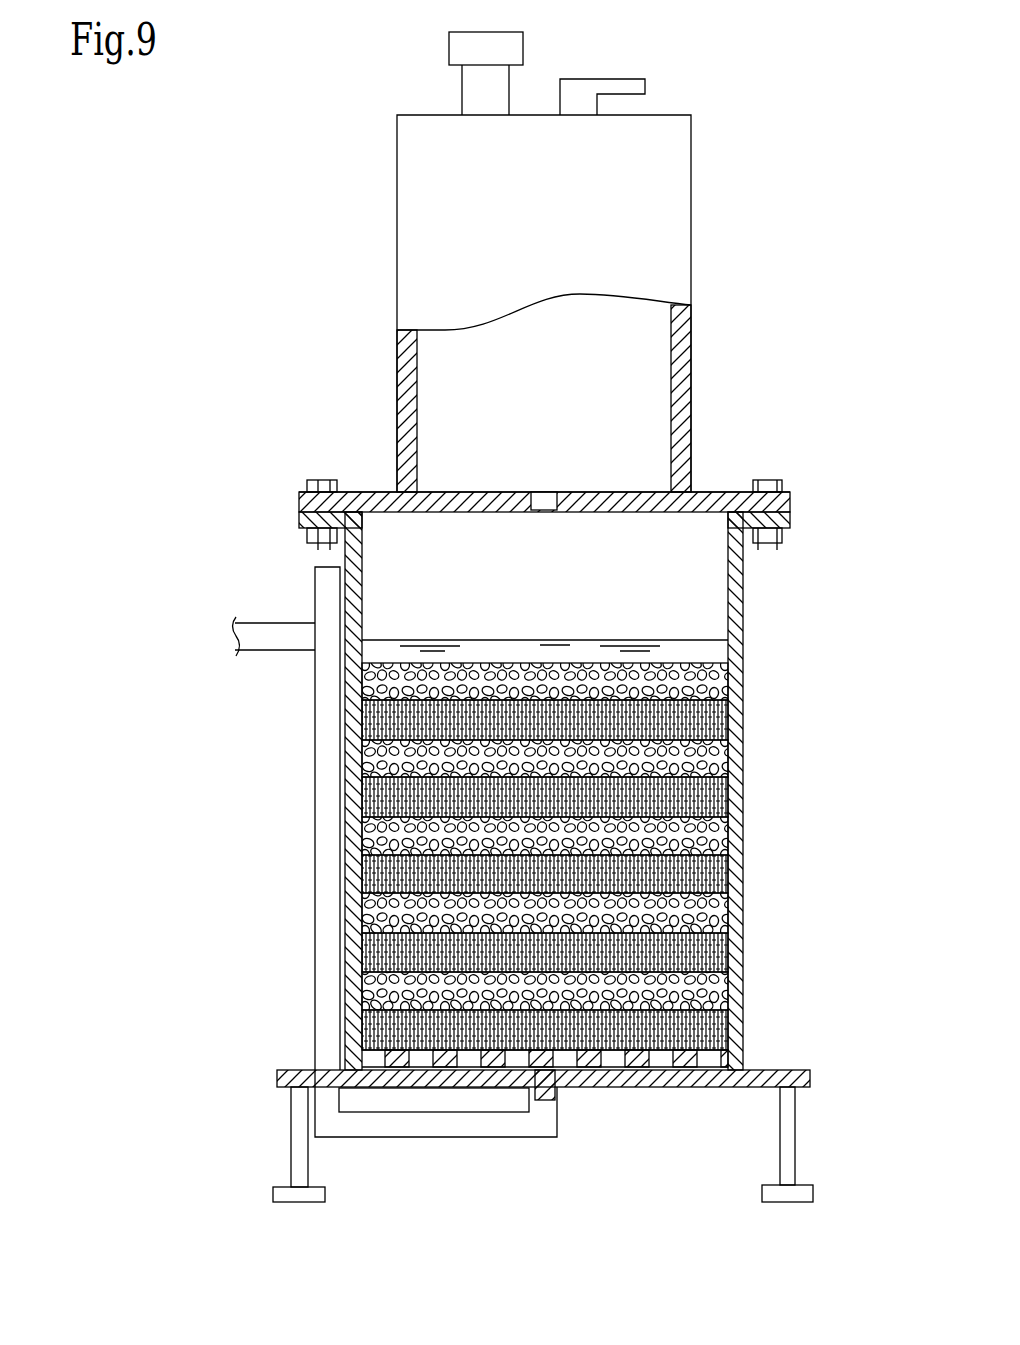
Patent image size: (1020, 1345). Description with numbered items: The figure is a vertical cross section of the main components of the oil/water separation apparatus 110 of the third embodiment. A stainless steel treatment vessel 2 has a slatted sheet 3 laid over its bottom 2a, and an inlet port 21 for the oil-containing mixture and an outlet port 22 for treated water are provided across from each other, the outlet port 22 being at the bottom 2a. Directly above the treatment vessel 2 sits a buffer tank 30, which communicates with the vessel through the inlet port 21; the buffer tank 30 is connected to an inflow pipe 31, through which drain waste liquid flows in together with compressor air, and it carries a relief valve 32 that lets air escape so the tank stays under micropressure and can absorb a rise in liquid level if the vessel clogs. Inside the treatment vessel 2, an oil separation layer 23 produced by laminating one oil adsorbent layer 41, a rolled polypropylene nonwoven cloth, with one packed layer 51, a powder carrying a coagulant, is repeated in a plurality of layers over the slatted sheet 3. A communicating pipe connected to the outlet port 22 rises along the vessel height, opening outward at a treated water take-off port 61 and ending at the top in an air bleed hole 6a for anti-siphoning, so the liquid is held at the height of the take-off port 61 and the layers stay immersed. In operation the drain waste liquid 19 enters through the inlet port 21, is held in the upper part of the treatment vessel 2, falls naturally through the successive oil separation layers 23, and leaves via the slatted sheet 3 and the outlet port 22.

The relief valve 32 is at (462, 49).
The inflow pipe 31 is at (613, 85).
The buffer tank 30 is at (685, 350).
The inlet port 21 is at (547, 502).
The air bleed hole 6a is at (333, 580).
The treated water take-off port 61 is at (267, 632).
The oil/water separation apparatus 110 is at (767, 598).
The drain waste liquid 19 is at (717, 652).
The packed layer 51 is at (367, 677).
The oil adsorbent layer 41 is at (362, 722).
The oil separation layer 23 is at (527, 856).
The treatment vessel 2 is at (740, 945).
The slatted sheet 3 is at (693, 1062).
The bottom 2a is at (478, 1072).
The outlet port 22 is at (542, 1100).